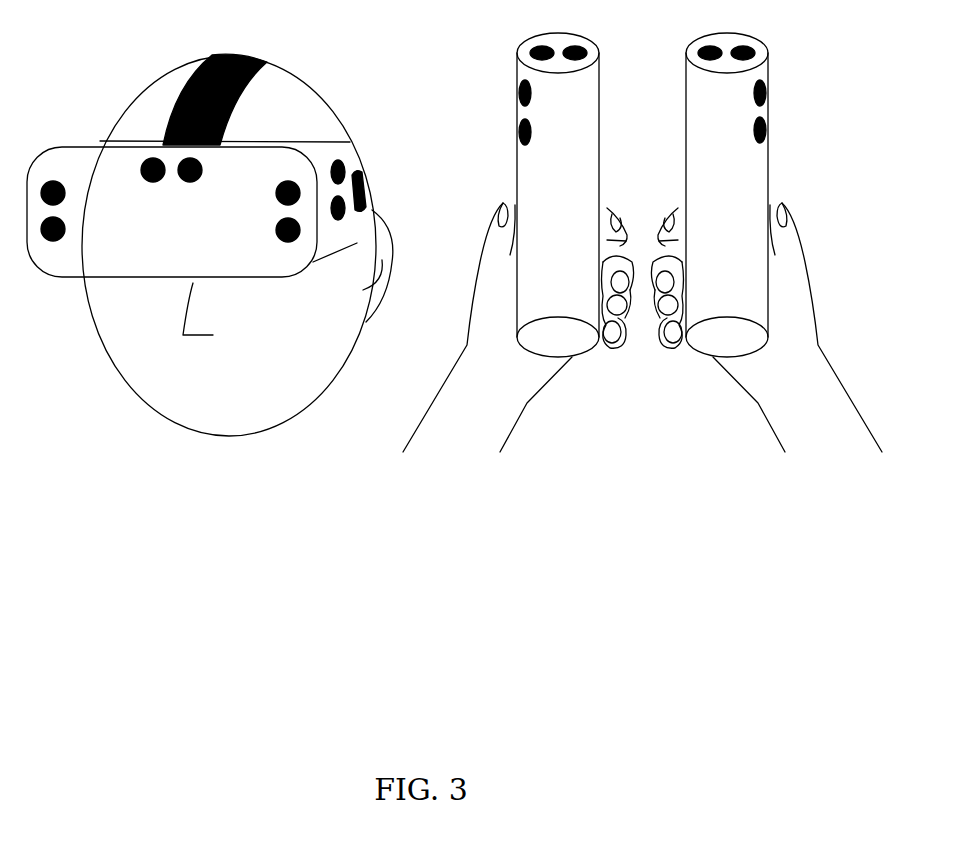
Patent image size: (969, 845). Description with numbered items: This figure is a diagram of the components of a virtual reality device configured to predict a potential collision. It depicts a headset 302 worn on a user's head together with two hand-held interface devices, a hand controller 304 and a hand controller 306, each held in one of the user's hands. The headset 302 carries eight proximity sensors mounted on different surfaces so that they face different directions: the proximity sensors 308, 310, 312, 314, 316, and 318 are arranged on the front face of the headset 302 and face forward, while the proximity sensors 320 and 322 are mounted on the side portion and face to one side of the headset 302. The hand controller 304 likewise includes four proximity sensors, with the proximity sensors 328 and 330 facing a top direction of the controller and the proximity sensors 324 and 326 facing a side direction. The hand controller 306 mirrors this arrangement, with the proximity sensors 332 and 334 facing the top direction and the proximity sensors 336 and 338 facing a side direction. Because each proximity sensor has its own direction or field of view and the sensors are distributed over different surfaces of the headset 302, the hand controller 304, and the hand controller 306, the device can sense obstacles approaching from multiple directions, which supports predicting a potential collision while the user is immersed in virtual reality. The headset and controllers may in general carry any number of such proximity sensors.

The headset 302 is at (75, 147).
The hand controller 304 is at (590, 84).
The hand controller 306 is at (694, 97).
The proximity sensor 308 is at (68, 193).
The proximity sensor 310 is at (68, 229).
The proximity sensor 312 is at (152, 184).
The proximity sensor 314 is at (190, 184).
The proximity sensor 316 is at (274, 193).
The proximity sensor 318 is at (274, 232).
The proximity sensor 320 is at (345, 165).
The proximity sensor 322 is at (372, 208).
The proximity sensor 324 is at (517, 95).
The proximity sensor 326 is at (517, 134).
The proximity sensor 328 is at (540, 46).
The proximity sensor 330 is at (574, 46).
The proximity sensor 332 is at (708, 46).
The proximity sensor 334 is at (743, 46).
The proximity sensor 336 is at (770, 95).
The proximity sensor 338 is at (771, 130).